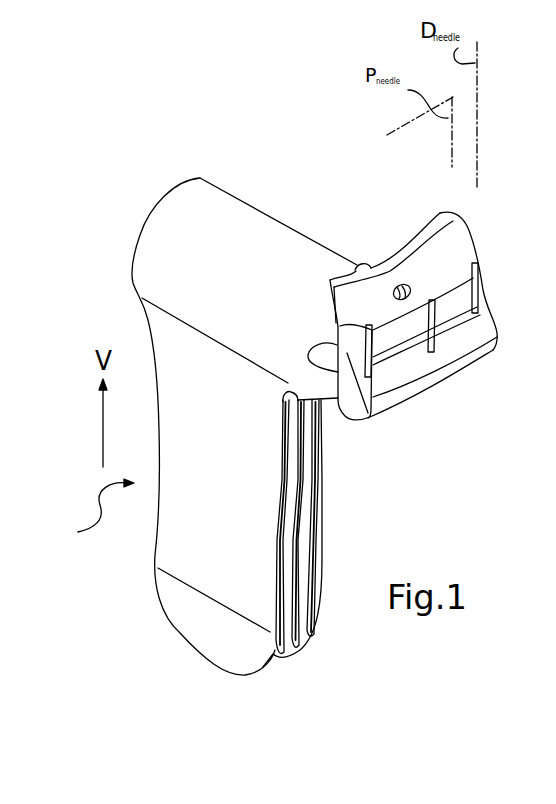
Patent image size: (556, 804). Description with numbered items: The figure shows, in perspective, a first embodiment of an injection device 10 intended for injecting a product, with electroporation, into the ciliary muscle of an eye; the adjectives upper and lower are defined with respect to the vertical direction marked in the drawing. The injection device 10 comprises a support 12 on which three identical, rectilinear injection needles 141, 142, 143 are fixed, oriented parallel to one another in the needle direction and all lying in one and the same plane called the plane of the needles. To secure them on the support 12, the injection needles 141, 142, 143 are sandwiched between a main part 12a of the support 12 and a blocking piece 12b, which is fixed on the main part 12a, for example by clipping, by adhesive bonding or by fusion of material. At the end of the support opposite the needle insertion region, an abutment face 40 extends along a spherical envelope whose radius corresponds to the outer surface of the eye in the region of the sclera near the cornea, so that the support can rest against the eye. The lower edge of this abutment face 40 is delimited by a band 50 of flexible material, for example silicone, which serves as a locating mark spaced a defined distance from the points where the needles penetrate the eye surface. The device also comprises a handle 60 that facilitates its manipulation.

The injection device 10 is at (133, 193).
The support 12 is at (268, 198).
The main part 12a is at (347, 420).
The blocking piece 12b is at (428, 383).
The injection needle 141 is at (333, 327).
The injection needle 142 is at (431, 298).
The injection needle 143 is at (481, 284).
The abutment face 40 is at (462, 237).
The band 50 is at (408, 253).
The handle 60 is at (91, 514).